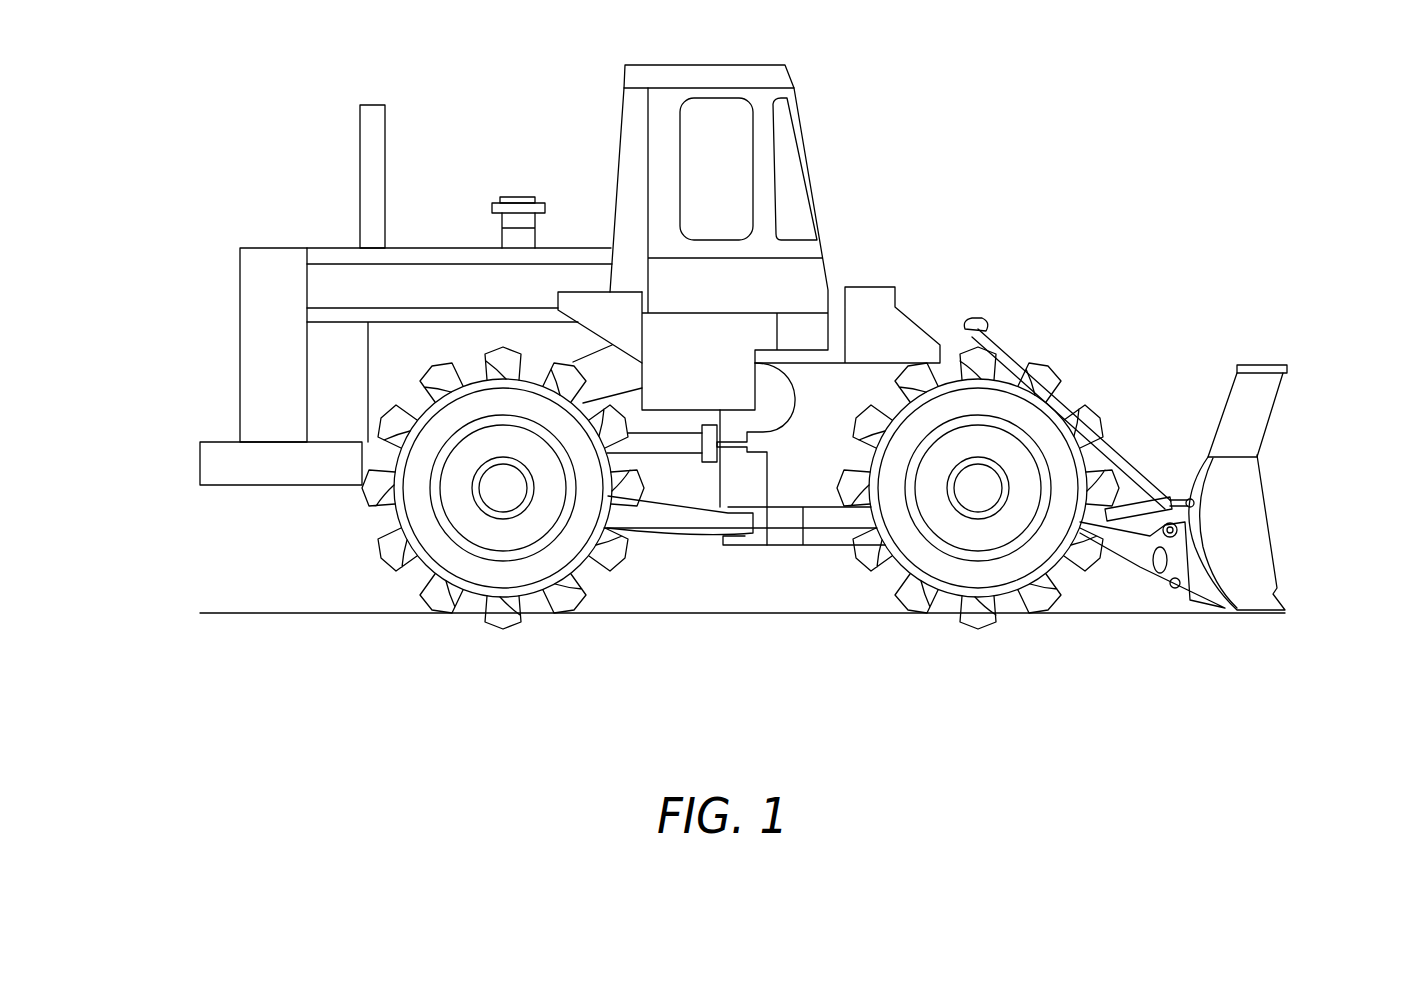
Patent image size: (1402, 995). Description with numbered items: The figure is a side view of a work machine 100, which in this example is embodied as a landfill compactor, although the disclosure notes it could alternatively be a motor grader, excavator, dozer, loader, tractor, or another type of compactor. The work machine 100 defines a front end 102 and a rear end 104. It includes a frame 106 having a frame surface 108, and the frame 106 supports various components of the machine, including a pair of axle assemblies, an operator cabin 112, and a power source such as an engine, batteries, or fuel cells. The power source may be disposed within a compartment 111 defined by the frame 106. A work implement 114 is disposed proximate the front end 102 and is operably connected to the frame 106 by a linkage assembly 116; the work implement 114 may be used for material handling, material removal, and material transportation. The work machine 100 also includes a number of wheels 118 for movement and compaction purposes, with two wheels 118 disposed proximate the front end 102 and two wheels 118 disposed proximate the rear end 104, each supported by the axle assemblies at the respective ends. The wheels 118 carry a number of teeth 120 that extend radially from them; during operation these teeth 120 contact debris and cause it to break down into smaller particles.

The work machine 100 is at (1122, 132).
The front end 102 is at (1318, 550).
The rear end 104 is at (180, 257).
The frame 106 is at (185, 465).
The frame surface 108 is at (287, 462).
The compartment 111 is at (335, 283).
The operator cabin 112 is at (618, 66).
The work implement 114 is at (1257, 490).
The linkage assembly 116 is at (1147, 443).
The wheels 118 is at (477, 570).
The teeth 120 is at (627, 577).